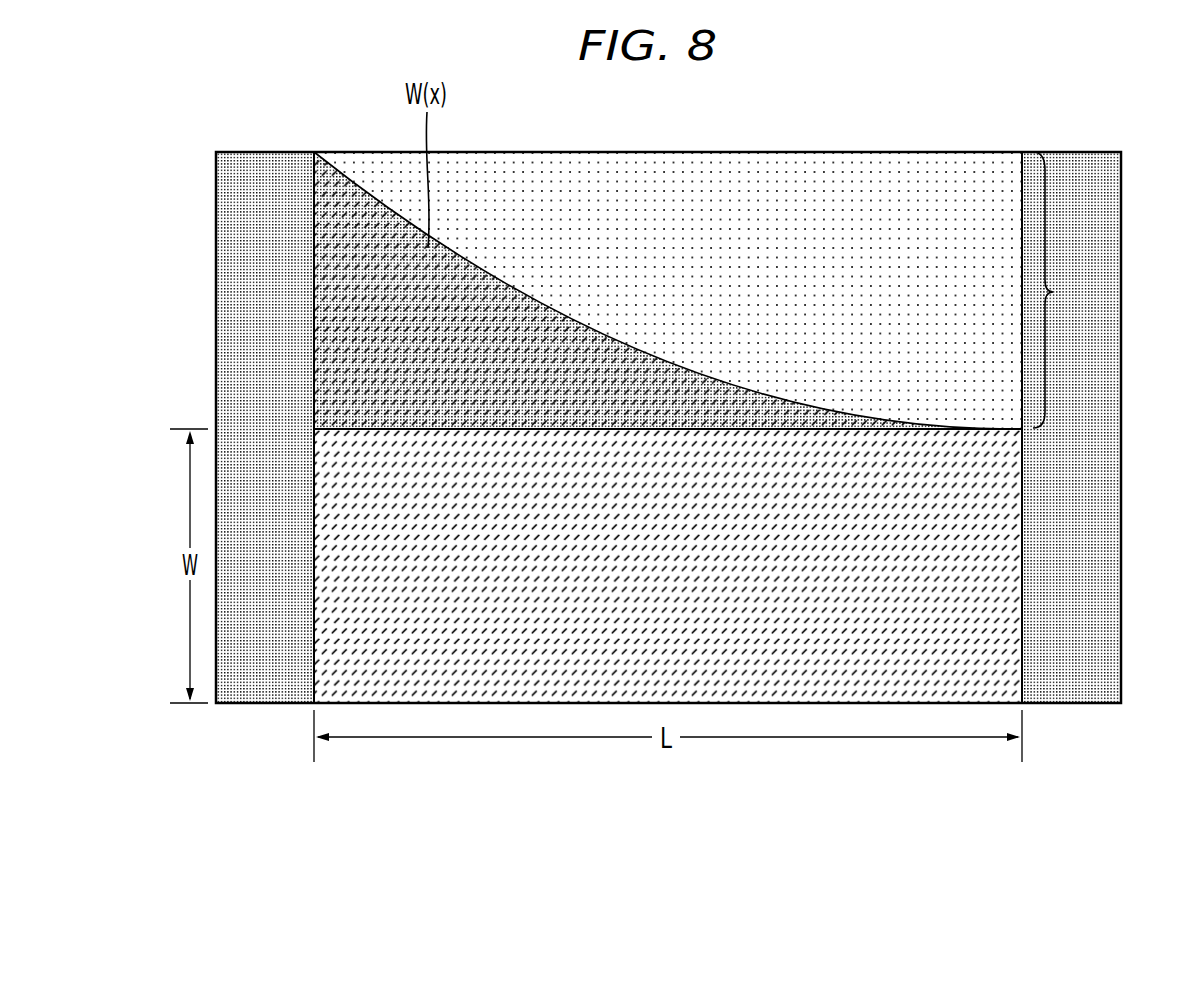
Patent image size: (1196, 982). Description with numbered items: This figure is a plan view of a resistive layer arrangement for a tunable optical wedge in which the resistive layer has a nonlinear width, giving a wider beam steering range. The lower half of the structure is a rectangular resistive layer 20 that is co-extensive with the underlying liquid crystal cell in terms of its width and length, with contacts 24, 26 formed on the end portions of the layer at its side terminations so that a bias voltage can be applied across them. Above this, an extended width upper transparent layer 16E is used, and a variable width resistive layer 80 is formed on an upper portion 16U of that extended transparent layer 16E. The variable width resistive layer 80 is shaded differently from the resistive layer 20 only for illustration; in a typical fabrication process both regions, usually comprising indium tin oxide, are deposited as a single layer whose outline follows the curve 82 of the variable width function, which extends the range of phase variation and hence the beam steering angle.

The resistive layer 20 is at (340, 655).
The first contact 24 is at (235, 275).
The second contact of first contact pair 26 is at (1110, 552).
The variable width resistive layer 80 is at (351, 225).
The curve 82 is at (642, 356).
The extended width upper transparent layer 16E is at (963, 168).
The upper portion of extended transparent layer 16U is at (1064, 290).